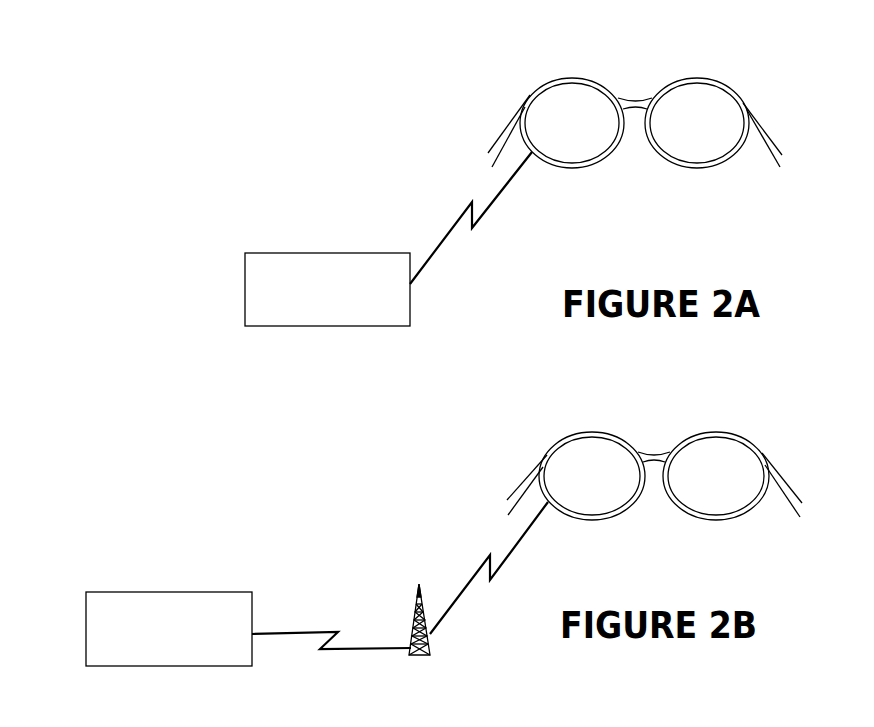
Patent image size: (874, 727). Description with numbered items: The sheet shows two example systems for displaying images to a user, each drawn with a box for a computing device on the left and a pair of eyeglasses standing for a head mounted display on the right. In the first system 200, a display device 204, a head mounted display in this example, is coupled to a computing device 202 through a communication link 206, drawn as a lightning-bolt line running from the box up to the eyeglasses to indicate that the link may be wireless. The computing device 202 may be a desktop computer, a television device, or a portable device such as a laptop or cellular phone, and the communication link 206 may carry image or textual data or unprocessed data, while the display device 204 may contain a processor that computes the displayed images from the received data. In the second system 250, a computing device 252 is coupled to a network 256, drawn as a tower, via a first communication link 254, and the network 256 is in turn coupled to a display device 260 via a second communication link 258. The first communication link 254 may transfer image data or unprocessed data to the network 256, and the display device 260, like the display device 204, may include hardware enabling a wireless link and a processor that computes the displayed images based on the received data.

In FIG. 2A, the system 200 is at (401, 152).
In FIG. 2A, the computing device 202 is at (270, 253).
In FIG. 2A, the display device 204 is at (727, 157).
In FIG. 2A, the communication link 206 is at (483, 220).
In FIG. 2B, the system 250 is at (413, 504).
In FIG. 2B, the computing device 252 is at (98, 592).
In FIG. 2B, the first communication link 254 is at (273, 632).
In FIG. 2B, the network 256 is at (415, 615).
In FIG. 2B, the second communication link 258 is at (520, 545).
In FIG. 2B, the display device 260 is at (743, 510).